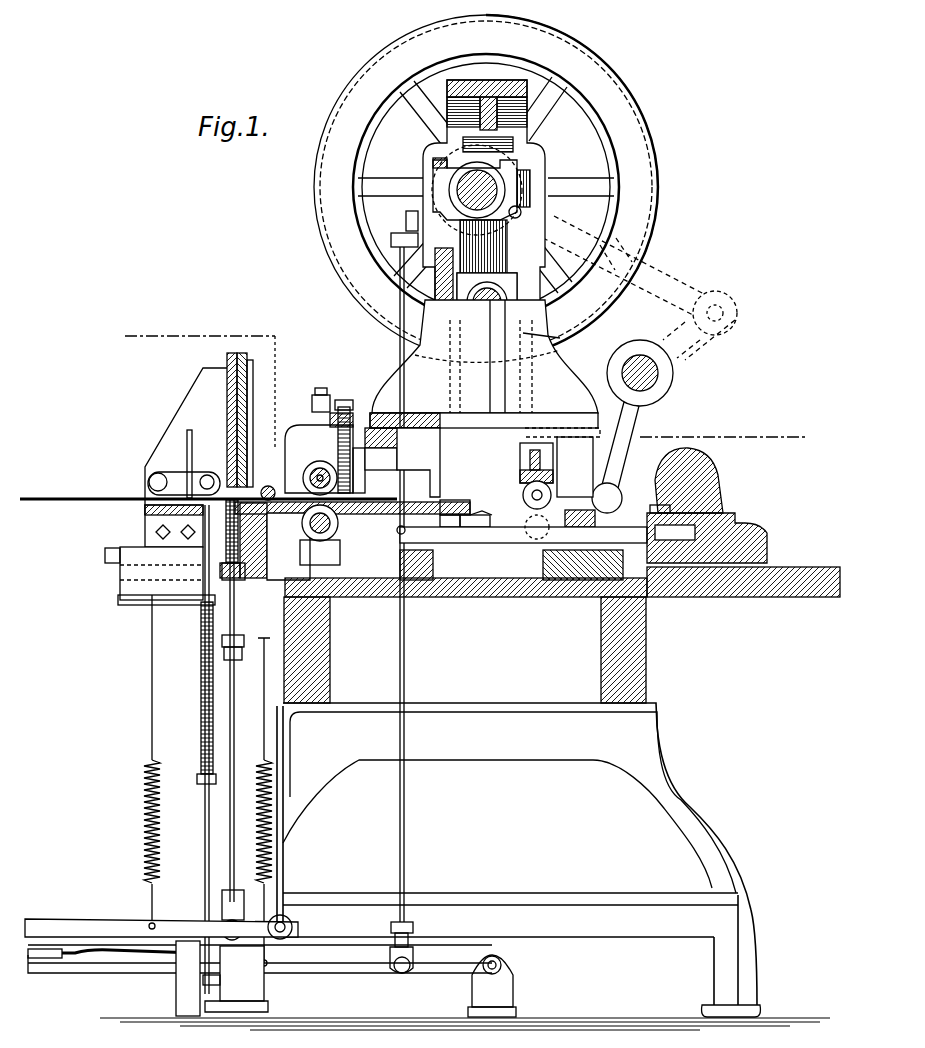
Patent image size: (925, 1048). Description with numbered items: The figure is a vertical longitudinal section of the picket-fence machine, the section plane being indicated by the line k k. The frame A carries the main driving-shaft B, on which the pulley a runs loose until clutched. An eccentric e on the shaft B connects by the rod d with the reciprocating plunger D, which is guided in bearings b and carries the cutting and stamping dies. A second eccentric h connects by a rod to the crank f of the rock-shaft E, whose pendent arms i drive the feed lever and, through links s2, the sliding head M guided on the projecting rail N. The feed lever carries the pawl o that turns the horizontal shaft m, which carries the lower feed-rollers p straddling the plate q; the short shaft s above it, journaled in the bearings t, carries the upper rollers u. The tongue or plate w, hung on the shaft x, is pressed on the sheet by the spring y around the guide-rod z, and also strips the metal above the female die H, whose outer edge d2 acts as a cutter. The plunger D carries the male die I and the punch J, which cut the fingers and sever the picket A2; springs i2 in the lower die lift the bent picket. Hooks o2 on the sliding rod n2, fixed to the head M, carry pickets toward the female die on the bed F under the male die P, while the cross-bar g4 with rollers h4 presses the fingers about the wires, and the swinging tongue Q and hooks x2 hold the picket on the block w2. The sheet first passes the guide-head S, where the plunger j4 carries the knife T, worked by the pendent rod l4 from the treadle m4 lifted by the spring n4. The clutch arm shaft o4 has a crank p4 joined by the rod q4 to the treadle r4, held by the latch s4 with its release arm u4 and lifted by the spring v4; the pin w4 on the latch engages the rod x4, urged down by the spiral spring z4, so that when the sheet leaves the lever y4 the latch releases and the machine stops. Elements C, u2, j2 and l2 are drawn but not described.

The pulley a is at (486, 187).
The frame A is at (548, 158).
The main driving-shaft B is at (478, 190).
The eccentric e is at (481, 190).
The eccentric h is at (508, 210).
The rod d is at (476, 247).
The bearings b is at (492, 303).
The reciprocating plunger D is at (481, 374).
The plate q is at (640, 275).
The crank f is at (699, 340).
The rock-shaft E is at (640, 373).
The pendent arms i is at (619, 451).
The links s2 is at (614, 498).
The crank p4 is at (401, 220).
The shaft o4 is at (414, 236).
The rod q4 is at (401, 610).
The section line k is at (466, 390).
The guide-head S is at (186, 441).
The plunger j4 is at (229, 412).
The knife T is at (248, 445).
The lever y4 is at (184, 464).
The female die H is at (245, 514).
The rod x4 is at (207, 806).
The spiral spring z4 is at (203, 685).
The pendent rod l4 is at (203, 745).
The spring n4 is at (143, 760).
The spring v4 is at (256, 802).
The treadle m4 is at (161, 927).
The arm u4 is at (111, 960).
The treadle r4 is at (272, 981).
The latch s4 is at (188, 978).
The stud or pin w4 is at (235, 979).
The cross-head C is at (243, 533).
The shaft x is at (266, 484).
The bearings t is at (310, 502).
The rollers u is at (320, 475).
The short shaft s is at (310, 480).
The horizontal shaft m is at (325, 523).
The rollers p is at (318, 540).
The spring y is at (349, 446).
The guide-rod z is at (335, 425).
The screw u2 is at (327, 395).
The tongue or plate w is at (365, 470).
The male die I is at (381, 459).
The male die or punch J is at (418, 462).
The outer edge d2 is at (438, 504).
The die j2 is at (447, 509).
The picket A2 is at (728, 487).
The spring l2 is at (481, 504).
The cross-bar g4 is at (530, 463).
The rollers h4 is at (544, 493).
The male die P is at (562, 462).
The pawl o is at (523, 535).
The springs i2 is at (532, 531).
The sliding rod n2 is at (511, 556).
The hooks or fingers o2 is at (395, 535).
The swinging tongue Q is at (689, 480).
The spring-pressed hooks x2 is at (661, 512).
The sliding head M is at (707, 538).
The block w2 is at (684, 538).
The projecting rail N is at (743, 591).
The bed F is at (465, 640).